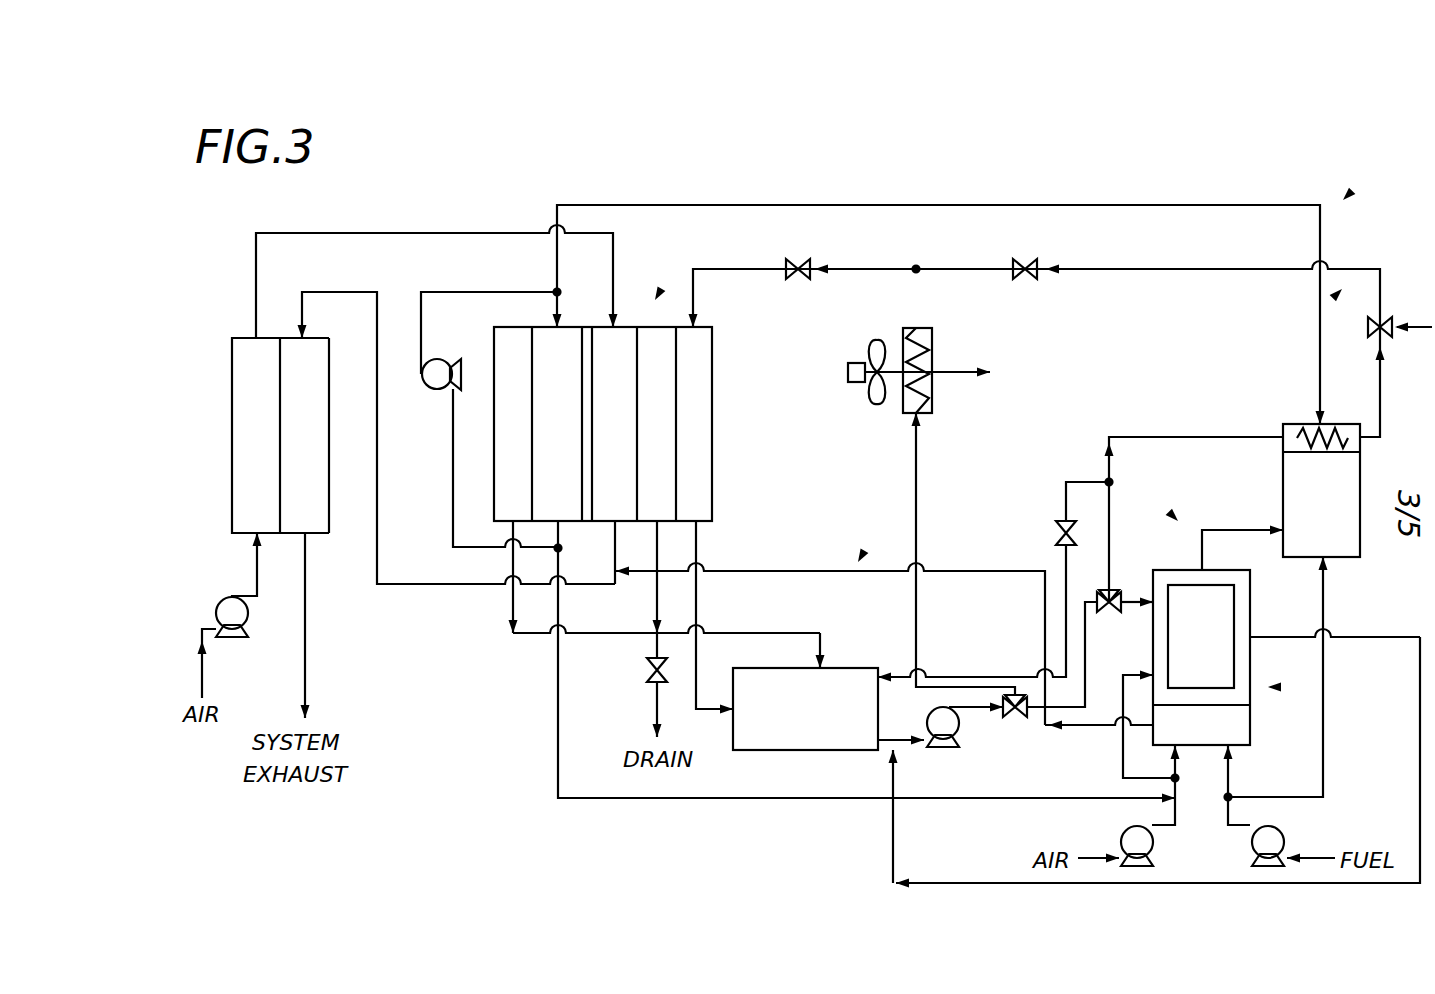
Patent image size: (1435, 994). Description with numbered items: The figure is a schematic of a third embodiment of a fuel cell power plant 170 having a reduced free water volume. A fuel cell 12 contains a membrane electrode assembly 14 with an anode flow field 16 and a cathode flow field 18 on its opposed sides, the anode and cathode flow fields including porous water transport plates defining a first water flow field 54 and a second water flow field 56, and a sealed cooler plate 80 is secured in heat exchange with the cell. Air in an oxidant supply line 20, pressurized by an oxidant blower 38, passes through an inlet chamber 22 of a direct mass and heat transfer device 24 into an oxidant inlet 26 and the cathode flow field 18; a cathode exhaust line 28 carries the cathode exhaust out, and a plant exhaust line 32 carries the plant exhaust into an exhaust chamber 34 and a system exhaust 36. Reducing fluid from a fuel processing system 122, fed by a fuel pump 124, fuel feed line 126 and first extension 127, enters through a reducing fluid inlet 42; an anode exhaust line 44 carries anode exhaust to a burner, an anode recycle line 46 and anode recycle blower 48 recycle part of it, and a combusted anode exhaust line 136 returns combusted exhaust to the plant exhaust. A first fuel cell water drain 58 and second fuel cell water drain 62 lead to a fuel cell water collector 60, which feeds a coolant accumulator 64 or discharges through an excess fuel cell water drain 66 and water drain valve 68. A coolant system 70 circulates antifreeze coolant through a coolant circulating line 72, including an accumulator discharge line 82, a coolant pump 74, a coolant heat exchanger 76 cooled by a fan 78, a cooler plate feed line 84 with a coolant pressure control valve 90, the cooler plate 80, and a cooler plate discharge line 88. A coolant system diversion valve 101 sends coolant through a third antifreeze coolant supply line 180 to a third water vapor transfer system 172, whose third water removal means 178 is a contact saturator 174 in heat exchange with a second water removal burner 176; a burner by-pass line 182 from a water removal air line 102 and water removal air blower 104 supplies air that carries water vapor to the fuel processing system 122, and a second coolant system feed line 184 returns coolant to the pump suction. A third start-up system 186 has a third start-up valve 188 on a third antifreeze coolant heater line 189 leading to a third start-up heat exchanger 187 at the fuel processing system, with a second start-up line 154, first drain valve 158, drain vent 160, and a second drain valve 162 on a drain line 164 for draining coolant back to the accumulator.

The fuel cell 12 is at (660, 290).
The membrane electrode assembly 14 is at (585, 335).
The anode flow field 16 is at (575, 394).
The cathode flow field 18 is at (630, 394).
The oxidant supply line 20 is at (204, 670).
The inlet chamber 22 is at (270, 458).
The direct mass and heat transfer device 24 is at (231, 383).
The oxidant inlet 26 is at (386, 232).
The cathode exhaust line 28 is at (613, 546).
The plant exhaust line 32 is at (378, 525).
The exhaust chamber 34 is at (319, 458).
The system exhaust 36 is at (306, 603).
The oxidant blower 38 is at (226, 600).
The reducing fluid inlet 42 is at (790, 204).
The anode exhaust line 44 is at (557, 708).
The anode recycle line 46 is at (452, 465).
The anode recycle blower 48 is at (440, 358).
The first water flow field 54 is at (528, 428).
The second water flow field 56 is at (670, 428).
The first fuel cell water drain 58 is at (512, 600).
The fuel cell water collector 60 is at (585, 633).
The second fuel cell water drain 62 is at (660, 546).
The coolant accumulator 64 is at (863, 667).
The excess fuel cell water drain 66 is at (660, 645).
The water drain valve 68 is at (645, 670).
The coolant system 70 is at (862, 555).
The coolant circulating line 72 is at (914, 452).
The coolant pump 74 is at (945, 712).
The coolant heat exchanger 76 is at (931, 338).
The fan 78 is at (848, 373).
The sealed cooler plate 80 is at (708, 394).
The accumulator discharge line 82 is at (897, 760).
The cooler plate feed line 84 is at (876, 268).
The cooler plate discharge line 88 is at (698, 612).
The coolant pressure control valve 90 is at (805, 282).
The coolant system diversion valve 101 is at (1015, 720).
The water removal air line 102 is at (1160, 813).
The water removal air blower 104 is at (1152, 845).
The fuel processing system 122 is at (1343, 535).
The fuel pump 124 is at (1275, 827).
The fuel feed line 126 is at (1245, 830).
The first extension 127 is at (1313, 798).
The combusted anode exhaust line 136 is at (1085, 742).
The second start-up line 154 is at (1381, 436).
The first drain valve 158 is at (1033, 282).
The drain vent 160 is at (1388, 314).
The second drain valve 162 is at (1055, 530).
The drain line 164 is at (1085, 482).
The fuel cell power plant 170 is at (1350, 190).
The third water vapor transfer system 172 is at (1172, 512).
The contact saturator 174 is at (1252, 616).
The second water removal burner 176 is at (1252, 728).
The third water removal means 178 is at (1283, 687).
The third antifreeze coolant supply line 180 is at (1086, 662).
The burner by-pass line 182 is at (1202, 530).
The second coolant system feed line 184 is at (1419, 725).
The third start-up system 186 is at (1330, 300).
The third start-up heat exchanger 187 is at (1296, 422).
The third start-up valve 188 is at (1124, 590).
The third antifreeze coolant heater line 189 is at (1190, 436).